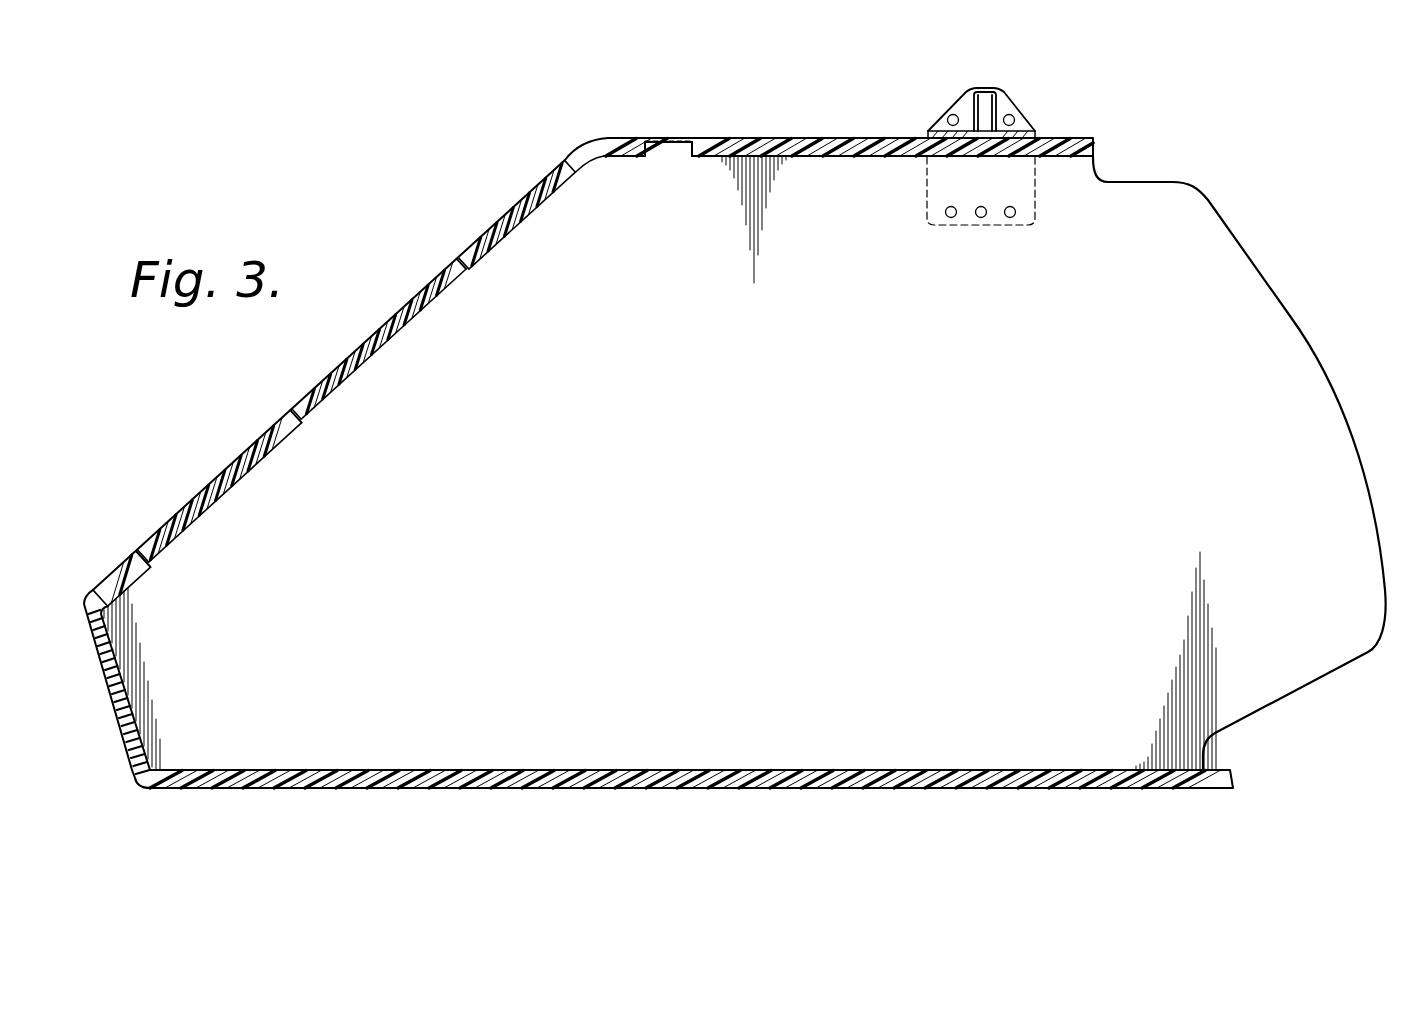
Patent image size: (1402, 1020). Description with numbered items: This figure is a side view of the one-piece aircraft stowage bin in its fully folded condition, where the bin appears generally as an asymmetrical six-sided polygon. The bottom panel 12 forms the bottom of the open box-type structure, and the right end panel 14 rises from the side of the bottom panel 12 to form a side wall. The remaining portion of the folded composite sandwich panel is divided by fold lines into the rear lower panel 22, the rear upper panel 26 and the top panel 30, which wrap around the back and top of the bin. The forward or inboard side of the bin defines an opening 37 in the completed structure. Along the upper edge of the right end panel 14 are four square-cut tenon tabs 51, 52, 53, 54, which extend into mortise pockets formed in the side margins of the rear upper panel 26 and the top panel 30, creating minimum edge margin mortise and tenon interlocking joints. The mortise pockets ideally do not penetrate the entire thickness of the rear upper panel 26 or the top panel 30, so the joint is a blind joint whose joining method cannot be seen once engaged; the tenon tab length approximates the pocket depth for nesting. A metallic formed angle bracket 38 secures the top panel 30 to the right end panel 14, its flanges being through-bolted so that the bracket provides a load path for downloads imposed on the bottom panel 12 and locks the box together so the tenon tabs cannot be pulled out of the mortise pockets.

The bottom panel 12 is at (725, 790).
The right end panel 14 is at (846, 496).
The rear lower panel 22 is at (116, 730).
The rear upper panel 26 is at (192, 490).
The top panel 30 is at (836, 138).
The opening 37 is at (1297, 325).
The right formed angle bracket 38 is at (985, 88).
The right end panel tenon tab 51 is at (157, 543).
The right end panel tenon tab 52 is at (303, 412).
The right end panel tenon tab 53 is at (449, 273).
The right end panel tenon tab 54 is at (666, 148).